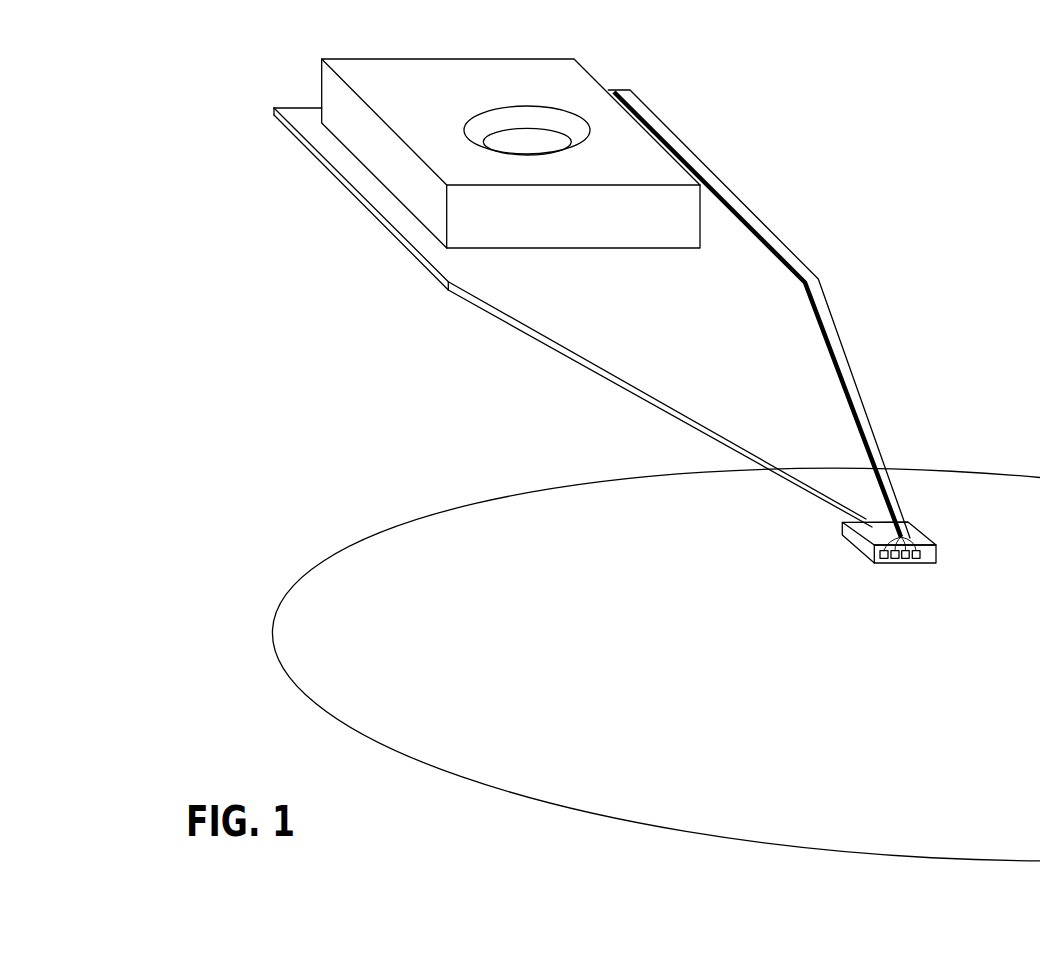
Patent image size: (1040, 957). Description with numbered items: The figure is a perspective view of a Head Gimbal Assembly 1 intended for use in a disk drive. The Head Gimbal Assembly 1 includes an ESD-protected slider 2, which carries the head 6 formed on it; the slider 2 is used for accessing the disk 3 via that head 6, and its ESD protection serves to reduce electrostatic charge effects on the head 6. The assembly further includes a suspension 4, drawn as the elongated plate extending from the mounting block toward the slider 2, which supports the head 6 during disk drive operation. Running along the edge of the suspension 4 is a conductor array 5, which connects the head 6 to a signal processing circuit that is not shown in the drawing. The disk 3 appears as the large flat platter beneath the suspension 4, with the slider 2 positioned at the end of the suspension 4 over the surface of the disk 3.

The Head Gimbal Assembly 1 is at (740, 172).
The ESD-protected slider 2 is at (920, 527).
The disk 3 is at (367, 532).
The suspension 4 is at (680, 327).
The conductor array 5 is at (815, 310).
The head 6 is at (880, 567).